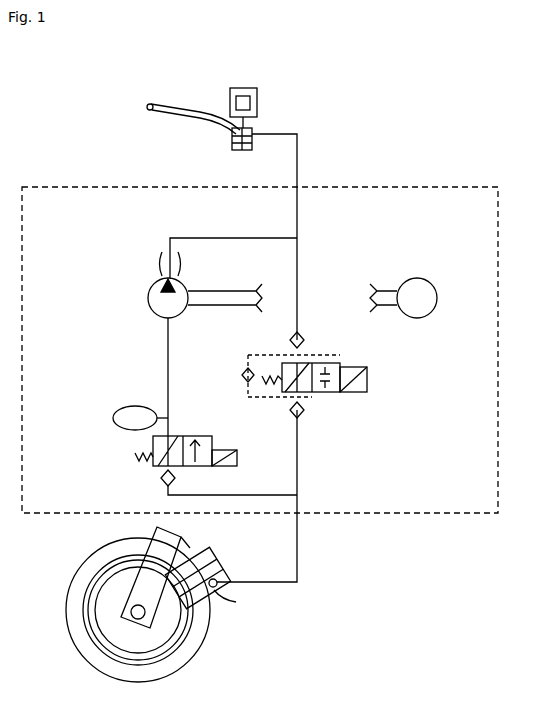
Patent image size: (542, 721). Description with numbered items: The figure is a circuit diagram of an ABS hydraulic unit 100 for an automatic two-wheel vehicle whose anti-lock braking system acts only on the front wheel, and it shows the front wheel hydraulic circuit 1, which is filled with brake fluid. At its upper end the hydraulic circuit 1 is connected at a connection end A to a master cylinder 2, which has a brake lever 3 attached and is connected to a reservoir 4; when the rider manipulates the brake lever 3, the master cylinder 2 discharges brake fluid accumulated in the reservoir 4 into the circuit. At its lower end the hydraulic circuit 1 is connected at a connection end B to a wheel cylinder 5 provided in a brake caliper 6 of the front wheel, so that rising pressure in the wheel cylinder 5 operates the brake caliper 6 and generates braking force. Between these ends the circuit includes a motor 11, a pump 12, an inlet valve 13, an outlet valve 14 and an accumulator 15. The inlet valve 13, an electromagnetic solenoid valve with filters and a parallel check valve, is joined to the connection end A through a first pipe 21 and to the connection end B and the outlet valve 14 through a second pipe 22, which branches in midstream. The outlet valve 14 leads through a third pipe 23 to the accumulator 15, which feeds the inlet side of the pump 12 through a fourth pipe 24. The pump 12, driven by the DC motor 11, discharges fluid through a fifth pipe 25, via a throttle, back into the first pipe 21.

The ABS hydraulic unit 100 is at (391, 106).
The hydraulic circuit 1 is at (58, 184).
The master cylinder 2 is at (250, 148).
The brake lever 3 is at (152, 117).
The reservoir 4 is at (230, 104).
The wheel cylinder 5 is at (218, 594).
The brake caliper 6 is at (216, 573).
The motor 11 is at (433, 283).
The pump 12 is at (184, 313).
The inlet valve 13 is at (340, 366).
The outlet valve 14 is at (212, 442).
The accumulator 15 is at (124, 406).
The first pipe 21 is at (297, 258).
The second pipe 22 is at (297, 443).
The third pipe 23 is at (170, 419).
The fourth pipe 24 is at (168, 352).
The fifth pipe 25 is at (235, 238).
The connection end A is at (300, 186).
The connection end B is at (297, 500).